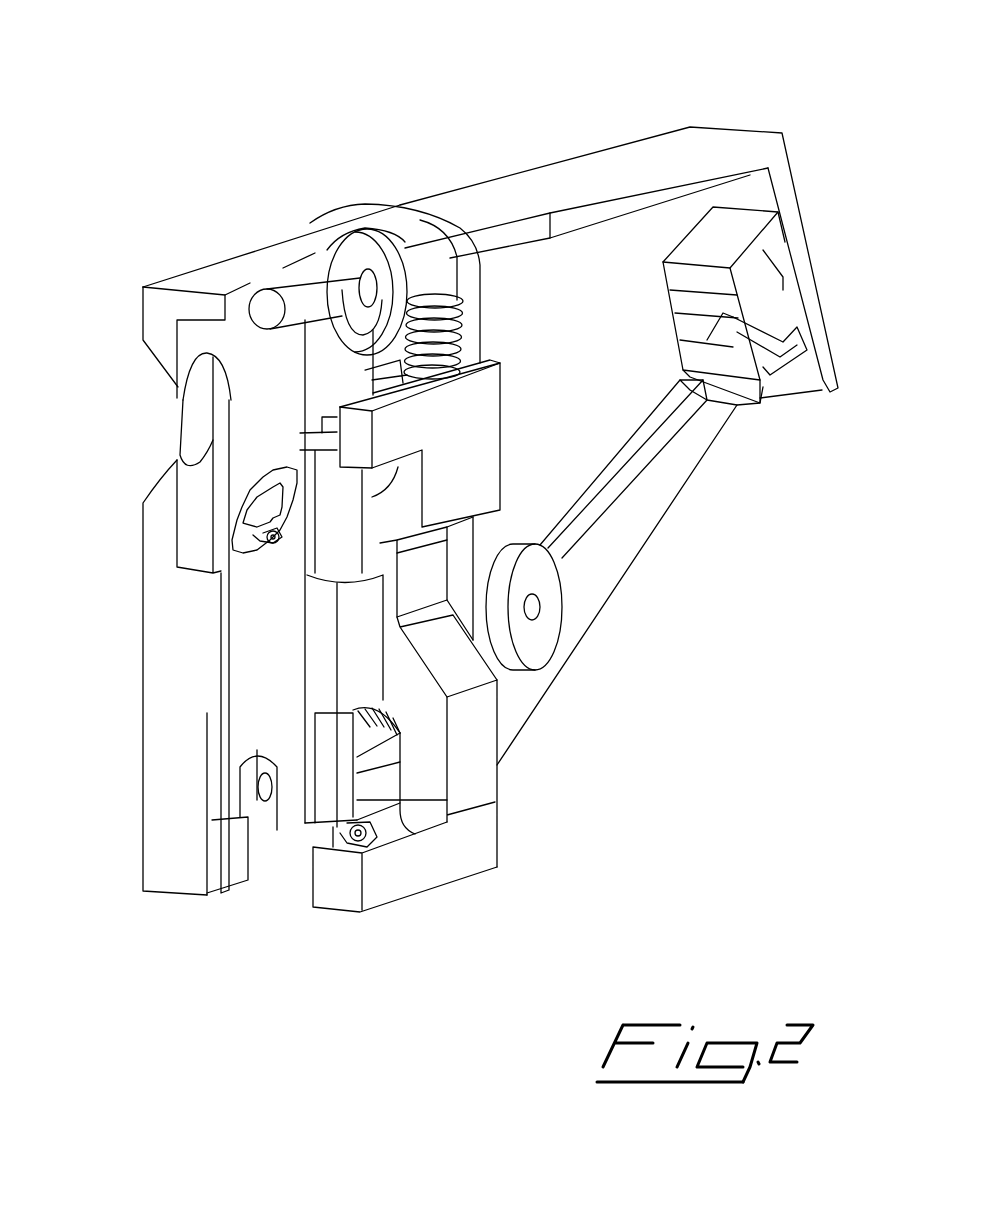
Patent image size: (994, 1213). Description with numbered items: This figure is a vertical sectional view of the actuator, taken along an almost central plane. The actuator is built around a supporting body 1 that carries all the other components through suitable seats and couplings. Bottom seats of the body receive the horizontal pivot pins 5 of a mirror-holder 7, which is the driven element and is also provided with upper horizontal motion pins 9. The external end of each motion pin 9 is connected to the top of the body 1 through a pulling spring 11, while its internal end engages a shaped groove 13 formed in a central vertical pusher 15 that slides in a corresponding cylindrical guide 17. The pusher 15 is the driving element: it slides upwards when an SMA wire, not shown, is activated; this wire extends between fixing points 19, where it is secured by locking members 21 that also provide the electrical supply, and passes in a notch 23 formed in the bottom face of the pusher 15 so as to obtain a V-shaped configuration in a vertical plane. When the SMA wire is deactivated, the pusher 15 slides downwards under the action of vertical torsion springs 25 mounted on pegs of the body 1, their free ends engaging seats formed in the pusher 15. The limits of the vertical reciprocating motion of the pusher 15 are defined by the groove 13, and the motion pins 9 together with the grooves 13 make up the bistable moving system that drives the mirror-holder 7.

The supporting body 1 is at (613, 170).
The horizontal pivot pin 5 is at (353, 840).
The mirror-holder 7 is at (410, 870).
The motion pin 9 is at (232, 556).
The pulling spring 11 is at (480, 297).
The shaped groove 13 is at (247, 507).
The pusher 15 is at (250, 660).
The cylindrical guide 17 is at (350, 697).
The fixing point 19 is at (720, 238).
The locking member 21 is at (768, 307).
The notch 23 is at (262, 790).
The vertical torsion spring 25 is at (350, 700).